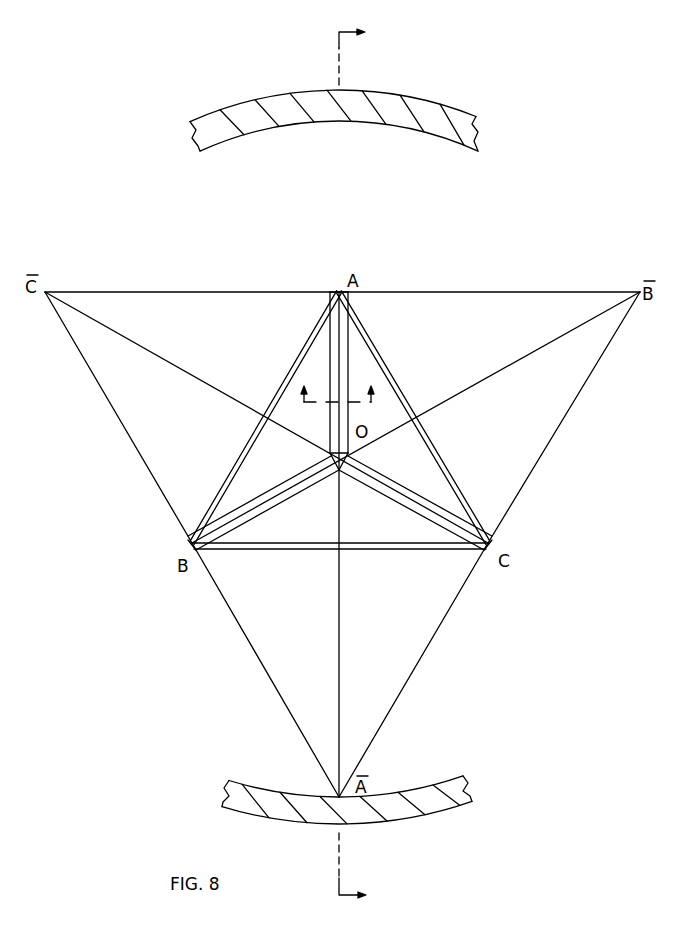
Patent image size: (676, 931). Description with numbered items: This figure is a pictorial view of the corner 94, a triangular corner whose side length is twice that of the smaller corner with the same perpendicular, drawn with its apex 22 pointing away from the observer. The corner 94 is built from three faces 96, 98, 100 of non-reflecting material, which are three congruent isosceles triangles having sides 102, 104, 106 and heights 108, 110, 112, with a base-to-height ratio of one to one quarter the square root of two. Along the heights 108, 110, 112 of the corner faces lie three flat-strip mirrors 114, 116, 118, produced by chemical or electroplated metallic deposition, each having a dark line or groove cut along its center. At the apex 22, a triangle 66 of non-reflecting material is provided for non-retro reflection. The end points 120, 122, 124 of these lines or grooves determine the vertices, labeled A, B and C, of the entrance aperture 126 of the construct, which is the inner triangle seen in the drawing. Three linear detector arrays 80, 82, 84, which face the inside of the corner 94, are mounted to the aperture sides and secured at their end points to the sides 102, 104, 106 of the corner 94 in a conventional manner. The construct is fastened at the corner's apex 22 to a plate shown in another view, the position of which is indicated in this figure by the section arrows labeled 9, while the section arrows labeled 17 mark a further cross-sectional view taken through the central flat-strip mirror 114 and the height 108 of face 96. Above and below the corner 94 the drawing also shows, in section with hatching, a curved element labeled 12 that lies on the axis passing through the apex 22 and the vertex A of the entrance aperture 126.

The section line 9- 9 is at (361, 464).
The primary mirror segment 12 is at (425, 100).
The section line 17- 17 is at (342, 384).
The apex 22 is at (327, 460).
The triangle of non-reflecting material 66 is at (350, 462).
The linear detector array 80 is at (368, 550).
The linear detector array 82 is at (440, 443).
The linear detector array 84 is at (252, 437).
The corner 94 is at (414, 281).
The face 96 is at (205, 302).
The face 98 is at (265, 632).
The face 100 is at (440, 612).
The side 102 is at (512, 292).
The side 104 is at (130, 441).
The side 106 is at (552, 440).
The height 108 is at (341, 330).
The height 110 is at (297, 487).
The height 112 is at (425, 507).
The flat-strip mirror 114 is at (347, 358).
The flat-strip mirror 116 is at (272, 492).
The flat-strip mirror 118 is at (375, 487).
The end point 120 is at (337, 290).
The end point 122 is at (192, 543).
The end point 124 is at (490, 545).
The entrance aperture 126 is at (396, 404).